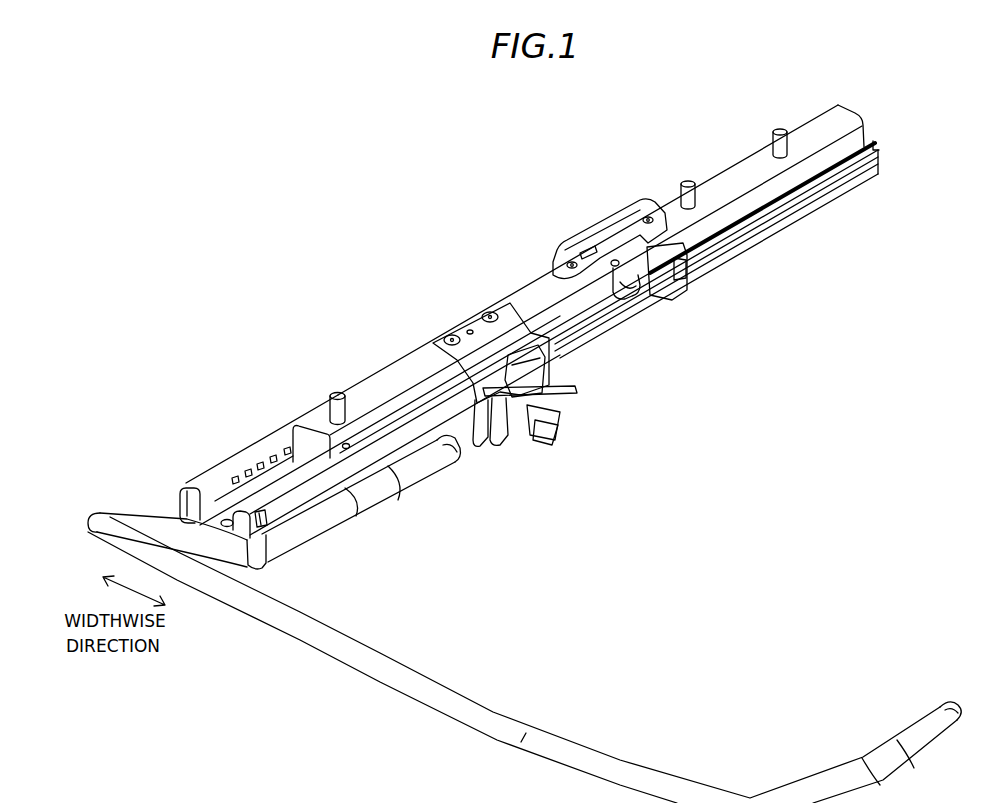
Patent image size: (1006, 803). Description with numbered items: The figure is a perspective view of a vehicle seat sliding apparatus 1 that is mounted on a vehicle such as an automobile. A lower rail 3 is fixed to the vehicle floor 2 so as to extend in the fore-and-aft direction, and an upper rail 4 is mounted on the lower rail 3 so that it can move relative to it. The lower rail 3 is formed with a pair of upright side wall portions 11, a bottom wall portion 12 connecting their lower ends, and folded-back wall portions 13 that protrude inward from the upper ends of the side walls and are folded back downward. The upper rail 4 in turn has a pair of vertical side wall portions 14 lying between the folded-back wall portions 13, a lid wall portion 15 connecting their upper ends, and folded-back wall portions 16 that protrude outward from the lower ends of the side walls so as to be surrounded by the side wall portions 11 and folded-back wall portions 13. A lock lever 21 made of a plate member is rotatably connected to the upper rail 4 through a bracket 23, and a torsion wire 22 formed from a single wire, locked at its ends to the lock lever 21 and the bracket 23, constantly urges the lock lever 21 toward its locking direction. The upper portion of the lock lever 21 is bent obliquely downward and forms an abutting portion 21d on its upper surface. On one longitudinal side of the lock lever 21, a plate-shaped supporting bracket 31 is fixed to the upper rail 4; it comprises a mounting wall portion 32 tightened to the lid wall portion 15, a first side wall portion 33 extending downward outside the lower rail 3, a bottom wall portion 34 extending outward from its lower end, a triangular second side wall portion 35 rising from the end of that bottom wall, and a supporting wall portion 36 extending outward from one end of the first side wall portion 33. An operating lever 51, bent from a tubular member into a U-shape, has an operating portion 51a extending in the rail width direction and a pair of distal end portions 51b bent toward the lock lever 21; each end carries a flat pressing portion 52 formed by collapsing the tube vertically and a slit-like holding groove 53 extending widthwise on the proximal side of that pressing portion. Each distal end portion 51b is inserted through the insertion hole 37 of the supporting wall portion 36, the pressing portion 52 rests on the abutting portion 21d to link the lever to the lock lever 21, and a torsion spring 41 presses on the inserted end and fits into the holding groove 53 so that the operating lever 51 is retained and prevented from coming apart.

The vehicle seat sliding apparatus 1 is at (182, 403).
The vehicle floor 2 is at (817, 221).
The lower rail 3 is at (685, 288).
The upper rail 4 is at (755, 158).
The side wall portions 11 is at (181, 505).
The bottom wall portion 12 is at (257, 485).
The folded-back wall portions 13 is at (224, 519).
The side wall portions 14 is at (297, 432).
The lid wall portion 15 is at (321, 416).
The folded-back wall portions 16 is at (273, 448).
The lock lever 21 is at (650, 287).
The abutting portion 21d is at (687, 257).
The torsion wire 22 is at (624, 292).
The bracket 23 is at (613, 233).
The supporting bracket 31 is at (505, 317).
The mounting wall portion 32 is at (467, 325).
The first side wall portion 33 is at (547, 360).
The bottom wall portion 34 is at (562, 380).
The second side wall portion 35 is at (552, 405).
The supporting wall portion 36 is at (497, 447).
The insertion hole 37 is at (478, 442).
The torsion spring 41 is at (537, 437).
The operating lever 51 is at (317, 642).
The operating portion 51a is at (392, 662).
The distal end portions 51b is at (390, 513).
The pressing portions 52 is at (433, 467).
The holding grooves 53 is at (357, 515).